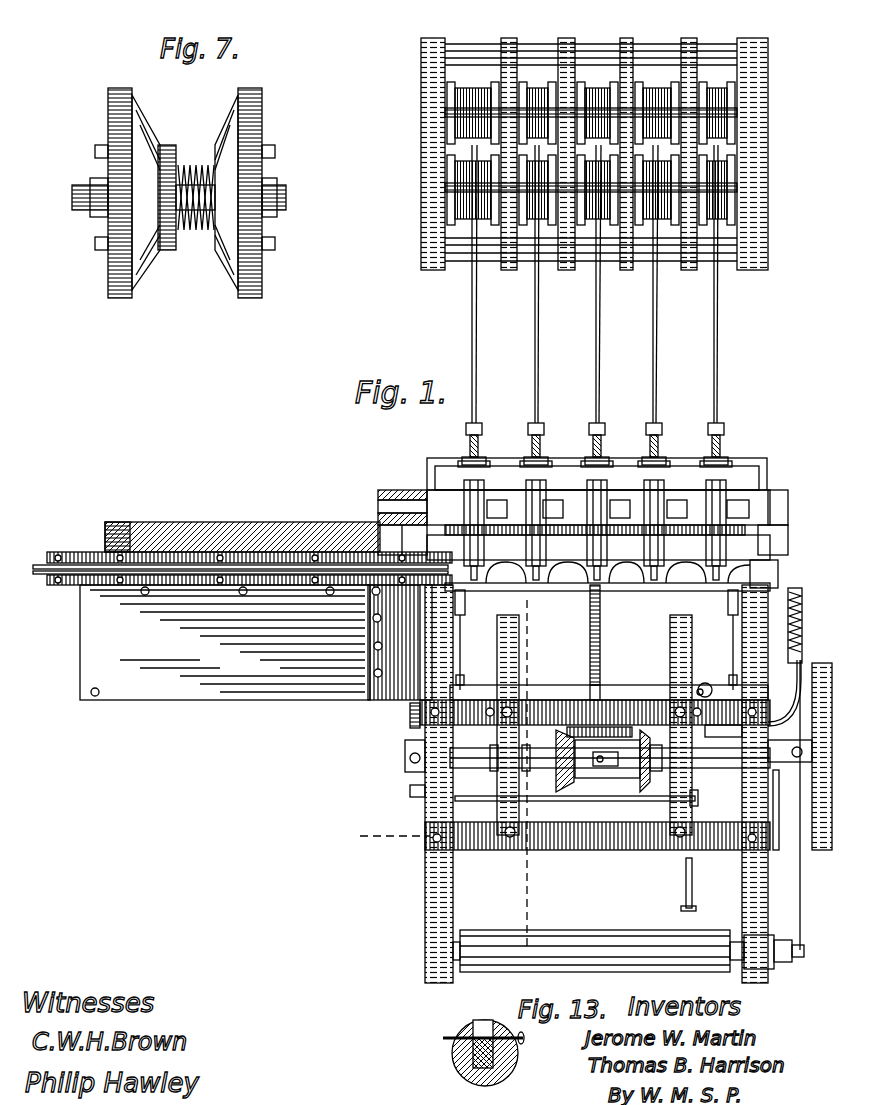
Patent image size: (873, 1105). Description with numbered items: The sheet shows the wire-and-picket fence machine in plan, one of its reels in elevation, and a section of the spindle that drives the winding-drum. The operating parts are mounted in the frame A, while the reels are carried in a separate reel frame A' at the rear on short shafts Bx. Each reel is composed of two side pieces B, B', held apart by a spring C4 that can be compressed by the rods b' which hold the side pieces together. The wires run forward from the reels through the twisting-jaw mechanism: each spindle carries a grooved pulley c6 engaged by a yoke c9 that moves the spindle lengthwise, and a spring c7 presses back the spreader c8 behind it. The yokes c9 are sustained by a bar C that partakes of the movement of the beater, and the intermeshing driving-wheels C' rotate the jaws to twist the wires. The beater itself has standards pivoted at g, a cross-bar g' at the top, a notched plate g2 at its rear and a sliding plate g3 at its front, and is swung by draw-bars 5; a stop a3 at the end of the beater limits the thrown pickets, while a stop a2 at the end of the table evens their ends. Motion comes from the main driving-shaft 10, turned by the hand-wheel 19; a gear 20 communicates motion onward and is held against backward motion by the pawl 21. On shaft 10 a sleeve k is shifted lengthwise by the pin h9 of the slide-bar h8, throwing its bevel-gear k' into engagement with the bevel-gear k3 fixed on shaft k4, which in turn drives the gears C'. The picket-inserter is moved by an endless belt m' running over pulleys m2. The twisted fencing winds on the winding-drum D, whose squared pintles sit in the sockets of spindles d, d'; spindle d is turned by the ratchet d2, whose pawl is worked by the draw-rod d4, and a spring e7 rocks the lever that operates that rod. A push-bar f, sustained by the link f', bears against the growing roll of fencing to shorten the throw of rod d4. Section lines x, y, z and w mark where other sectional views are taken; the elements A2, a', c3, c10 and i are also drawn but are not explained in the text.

In FIG. 7, the reel side piece B is at (134, 192).
In FIG. 1, the reel side piece B is at (591, 78).
In FIG. 7, the reel side piece B' is at (251, 192).
In FIG. 1, the reel side piece B' is at (591, 119).
In FIG. 7, the rod b' is at (192, 204).
In FIG. 7, the spring C4 is at (196, 232).
In FIG. 7, the short shaft Bx is at (287, 192).
In FIG. 1, the reel frame A' is at (593, 154).
In FIG. 1, the yoke c9 is at (486, 460).
In FIG. 1, the grooved pulley c6 is at (605, 458).
In FIG. 1, the spring c7 is at (710, 450).
In FIG. 1, the spreader c8 is at (724, 430).
In FIG. 1, the bar C is at (598, 480).
In FIG. 1, the end block c10 is at (587, 494).
In FIG. 1, the section line w is at (583, 540).
In FIG. 1, the rack c3 is at (598, 530).
In FIG. 1, the driving-wheel C' is at (616, 530).
In FIG. 1, the cross-bar g' is at (607, 576).
In FIG. 1, the notched plate g2 is at (630, 562).
In FIG. 1, the sliding plate g3 is at (612, 635).
In FIG. 1, the stop a3 is at (764, 574).
In FIG. 1, the endless belt m' is at (240, 542).
In FIG. 1, the pulley m2 is at (238, 582).
In FIG. 1, the table plate A2 is at (225, 642).
In FIG. 1, the stop a2 is at (400, 642).
In FIG. 1, the section line y is at (388, 710).
In FIG. 1, the frame A is at (565, 784).
In FIG. 1, the upright post a' is at (600, 725).
In FIG. 1, the draw-bar 5 is at (596, 640).
In FIG. 1, the shaft k4 is at (604, 640).
In FIG. 1, the bevel-gear k3 is at (612, 710).
In FIG. 1, the pin i is at (486, 712).
In FIG. 1, the beater pivot g is at (704, 693).
In FIG. 1, the sleeve k is at (587, 762).
In FIG. 1, the bevel-gear k' is at (609, 762).
In FIG. 1, the slide-bar h8 is at (575, 805).
In FIG. 1, the pin h9 is at (668, 796).
In FIG. 1, the main driving-shaft 10 is at (722, 736).
In FIG. 1, the spring e7 is at (802, 625).
In FIG. 1, the push-bar f is at (784, 693).
In FIG. 1, the hand-wheel 19 is at (822, 756).
In FIG. 1, the gear 20 is at (790, 749).
In FIG. 1, the pawl 21 is at (786, 810).
In FIG. 1, the section line z is at (576, 841).
In FIG. 1, the draw-rod d4 is at (810, 805).
In FIG. 1, the link f' is at (695, 884).
In FIG. 1, the winding-drum D is at (595, 938).
In FIG. 1, the spindle d is at (752, 937).
In FIG. 13, the spindle d is at (491, 1053).
In FIG. 1, the spindle d' is at (456, 971).
In FIG. 1, the ratchet d2 is at (780, 962).
In FIG. 1, the section line x is at (540, 985).